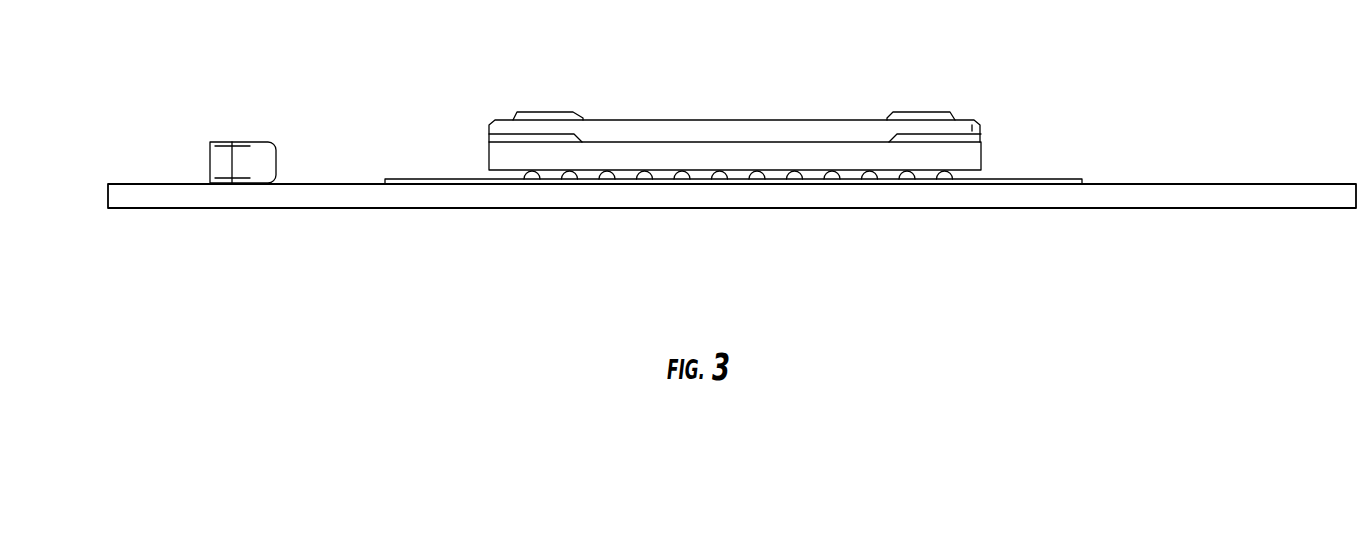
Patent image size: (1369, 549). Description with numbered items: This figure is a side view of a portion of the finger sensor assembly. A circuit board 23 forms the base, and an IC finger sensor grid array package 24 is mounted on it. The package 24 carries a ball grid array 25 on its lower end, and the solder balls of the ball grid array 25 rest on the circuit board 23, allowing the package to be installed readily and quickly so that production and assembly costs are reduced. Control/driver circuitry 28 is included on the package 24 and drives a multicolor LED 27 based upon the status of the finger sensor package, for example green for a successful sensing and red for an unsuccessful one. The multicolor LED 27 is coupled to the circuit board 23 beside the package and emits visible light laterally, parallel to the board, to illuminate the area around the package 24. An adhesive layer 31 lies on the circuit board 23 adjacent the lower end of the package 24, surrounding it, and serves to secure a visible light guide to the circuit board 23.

The circuit board 23 is at (250, 199).
The IC finger sensor grid array package 24 is at (505, 132).
The ball grid array 25 is at (607, 181).
The multicolor LED 27 is at (240, 163).
The control/driver circuitry 28 is at (983, 155).
The adhesive layer 31 is at (442, 181).